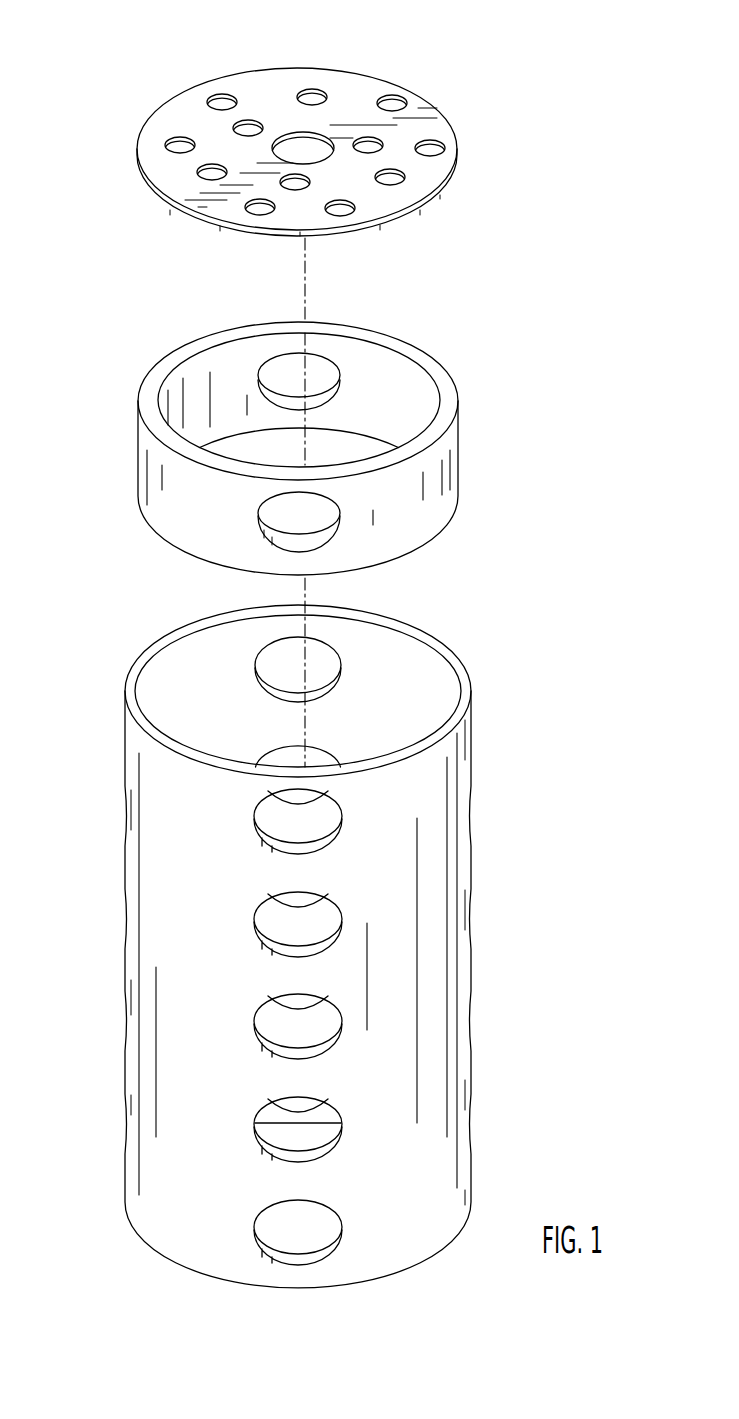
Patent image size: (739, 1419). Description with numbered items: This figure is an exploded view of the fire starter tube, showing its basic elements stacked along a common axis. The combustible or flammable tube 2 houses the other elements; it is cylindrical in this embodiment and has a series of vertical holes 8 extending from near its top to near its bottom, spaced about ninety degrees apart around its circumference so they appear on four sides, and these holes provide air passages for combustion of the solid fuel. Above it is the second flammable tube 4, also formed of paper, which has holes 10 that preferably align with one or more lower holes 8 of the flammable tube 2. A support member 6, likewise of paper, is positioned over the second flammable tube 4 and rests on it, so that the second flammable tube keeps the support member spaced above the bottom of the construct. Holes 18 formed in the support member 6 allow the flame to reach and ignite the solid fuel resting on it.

The flammable tube 2 is at (452, 807).
The second flammable tube 4 is at (437, 480).
The support member 6 is at (437, 127).
The vertical holes 8 is at (322, 662).
The holes 10 is at (320, 370).
The holes 18 is at (312, 137).